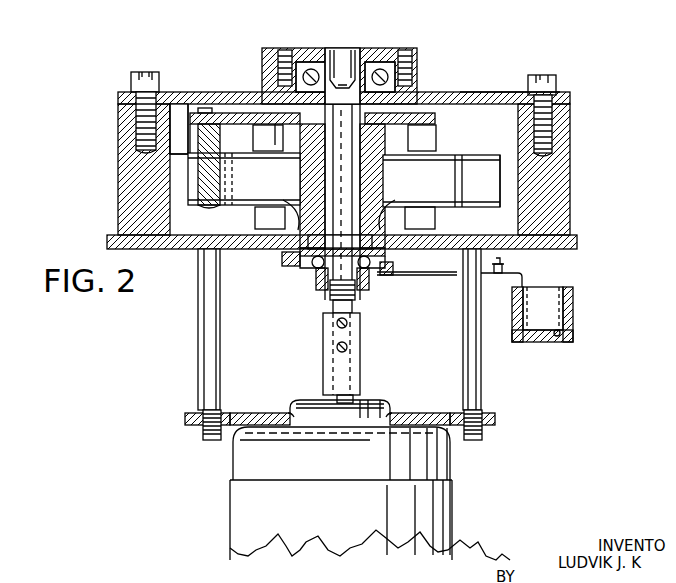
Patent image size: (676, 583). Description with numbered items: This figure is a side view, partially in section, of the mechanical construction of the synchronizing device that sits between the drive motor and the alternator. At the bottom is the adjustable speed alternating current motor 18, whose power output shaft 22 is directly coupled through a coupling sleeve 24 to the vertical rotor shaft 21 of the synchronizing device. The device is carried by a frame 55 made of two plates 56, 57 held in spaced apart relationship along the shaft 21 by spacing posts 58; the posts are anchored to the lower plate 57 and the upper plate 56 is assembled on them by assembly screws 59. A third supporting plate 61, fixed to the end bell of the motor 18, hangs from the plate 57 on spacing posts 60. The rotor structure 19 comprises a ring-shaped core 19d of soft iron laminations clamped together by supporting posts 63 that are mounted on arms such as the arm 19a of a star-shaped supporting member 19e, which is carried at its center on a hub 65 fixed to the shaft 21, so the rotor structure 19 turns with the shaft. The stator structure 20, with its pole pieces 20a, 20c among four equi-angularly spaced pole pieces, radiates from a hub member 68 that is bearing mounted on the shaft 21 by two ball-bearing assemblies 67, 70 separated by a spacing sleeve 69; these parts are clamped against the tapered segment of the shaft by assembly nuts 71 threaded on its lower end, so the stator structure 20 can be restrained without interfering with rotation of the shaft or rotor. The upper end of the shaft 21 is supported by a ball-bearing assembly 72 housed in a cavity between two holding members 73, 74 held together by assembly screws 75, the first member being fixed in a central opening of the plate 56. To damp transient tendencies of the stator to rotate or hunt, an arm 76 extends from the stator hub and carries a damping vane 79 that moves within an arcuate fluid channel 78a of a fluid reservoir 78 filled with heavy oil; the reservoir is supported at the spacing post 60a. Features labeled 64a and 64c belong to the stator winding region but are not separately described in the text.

The adjustable speed alternating current motor 18 is at (238, 508).
The rotor structure 19 is at (190, 192).
The arm 19a is at (226, 112).
The ring-shaped core 19d is at (497, 154).
The star-shaped supporting member 19e is at (247, 113).
The stator structure 20 is at (440, 150).
The pole piece 20a is at (448, 200).
The pole piece 20c is at (200, 258).
The rotor shaft 21 is at (342, 202).
The power output shaft 22 is at (353, 398).
The coupling sleeve 24 is at (323, 348).
The frame 55 is at (347, 176).
The plate 56 is at (480, 92).
The plate 57 is at (430, 249).
The spacing posts 58 is at (118, 178).
The assembly screws 59 is at (146, 72).
The spacing posts 60 is at (200, 338).
The spacing post 60a is at (482, 390).
The third supporting plate 61 is at (420, 412).
The supporting posts 63 is at (196, 140).
The flange plate 64a is at (408, 275).
The flange block 64c is at (285, 258).
The hub 65 is at (330, 110).
The ball-bearing assembly 67 is at (302, 170).
The hub member 68 is at (310, 252).
The spacing sleeve 69 is at (300, 268).
The ball-bearing assembly 70 is at (370, 276).
The assembly nuts 71 is at (356, 296).
The ball-bearing assembly 72 is at (312, 66).
The holding member 73 is at (435, 84).
The holding member 74 is at (420, 70).
The assembly screws 75 is at (285, 50).
The arm 76 is at (488, 274).
The fluid reservoir 78 is at (540, 342).
The arcuate fluid channel 78a is at (562, 342).
The damping vane 79 is at (547, 288).